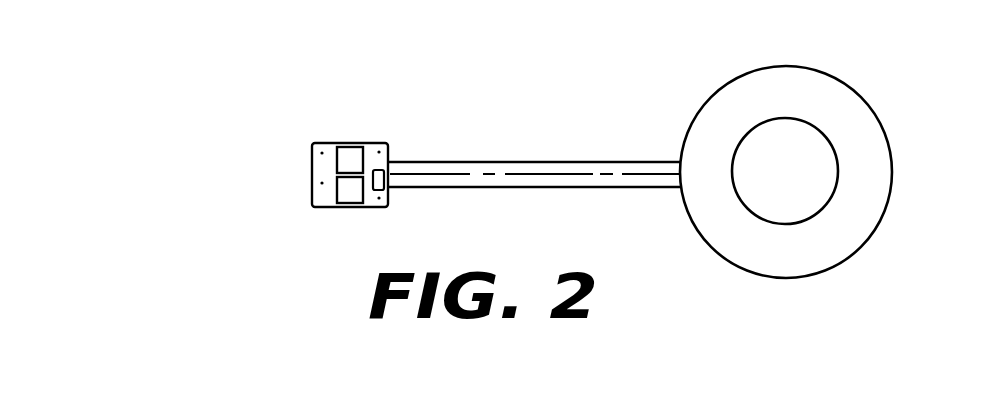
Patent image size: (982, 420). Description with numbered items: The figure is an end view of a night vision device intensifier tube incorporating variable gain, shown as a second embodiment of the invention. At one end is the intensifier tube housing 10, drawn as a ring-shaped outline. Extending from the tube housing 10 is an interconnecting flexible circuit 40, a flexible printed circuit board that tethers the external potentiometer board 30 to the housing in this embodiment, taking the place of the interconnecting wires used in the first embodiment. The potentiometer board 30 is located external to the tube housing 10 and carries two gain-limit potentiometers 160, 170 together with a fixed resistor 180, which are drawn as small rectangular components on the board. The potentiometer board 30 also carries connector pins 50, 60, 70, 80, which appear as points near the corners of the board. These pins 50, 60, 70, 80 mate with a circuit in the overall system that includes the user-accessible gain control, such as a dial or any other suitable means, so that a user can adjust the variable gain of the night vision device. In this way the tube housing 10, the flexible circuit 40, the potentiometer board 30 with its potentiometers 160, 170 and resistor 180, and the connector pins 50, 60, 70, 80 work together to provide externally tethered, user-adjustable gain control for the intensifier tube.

The intensifier tube housing 10 is at (891, 195).
The interconnecting flexible circuit 40 is at (600, 187).
The potentiometer board 30 is at (312, 174).
The connector pin 70 is at (322, 153).
The connector pin 80 is at (322, 183).
The connector pin 60 is at (379, 152).
The connector pin 50 is at (379, 198).
The gain-limit potentiometer 170 is at (356, 153).
The gain-limit potentiometer 160 is at (352, 193).
The fixed resistor 180 is at (386, 188).